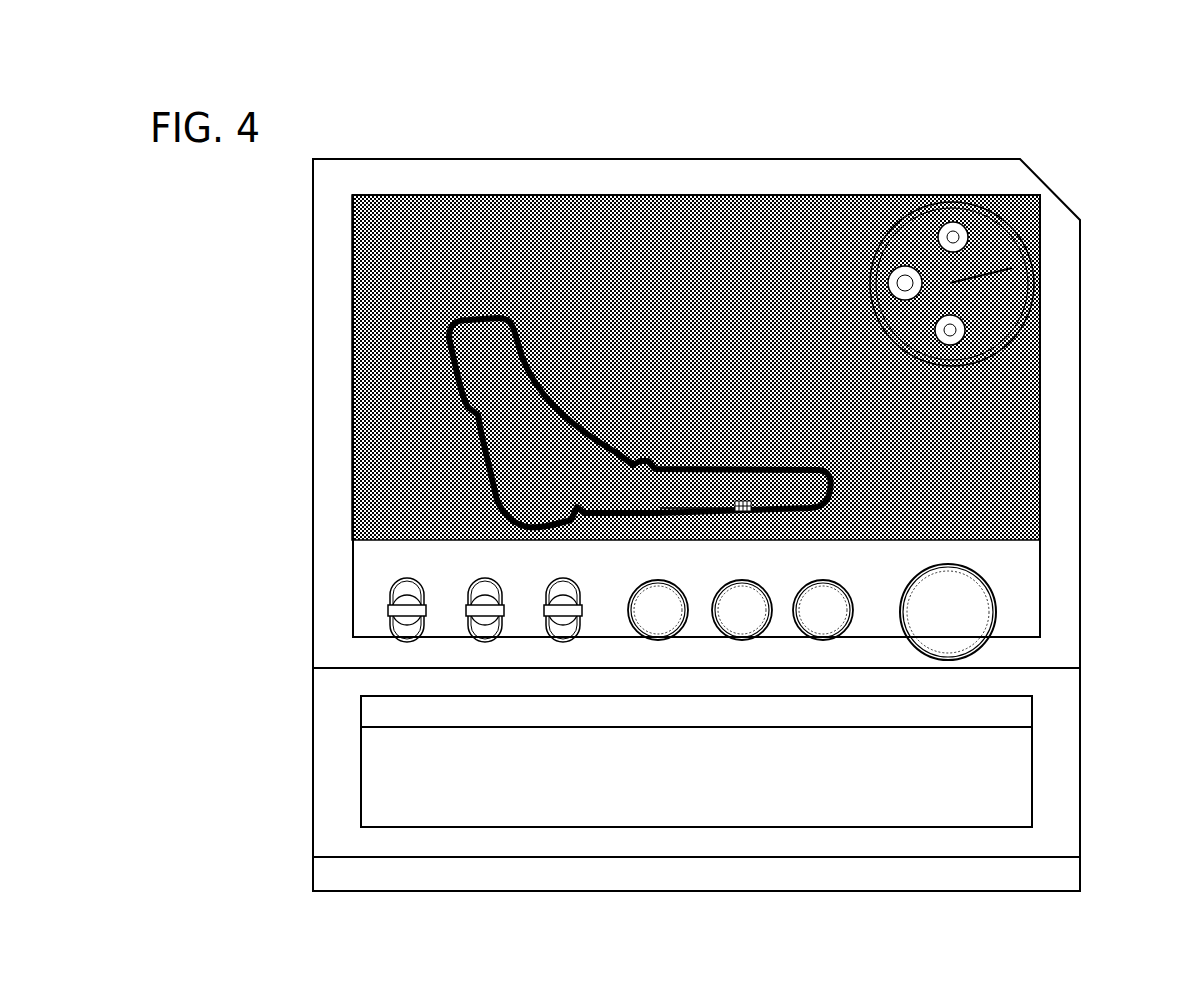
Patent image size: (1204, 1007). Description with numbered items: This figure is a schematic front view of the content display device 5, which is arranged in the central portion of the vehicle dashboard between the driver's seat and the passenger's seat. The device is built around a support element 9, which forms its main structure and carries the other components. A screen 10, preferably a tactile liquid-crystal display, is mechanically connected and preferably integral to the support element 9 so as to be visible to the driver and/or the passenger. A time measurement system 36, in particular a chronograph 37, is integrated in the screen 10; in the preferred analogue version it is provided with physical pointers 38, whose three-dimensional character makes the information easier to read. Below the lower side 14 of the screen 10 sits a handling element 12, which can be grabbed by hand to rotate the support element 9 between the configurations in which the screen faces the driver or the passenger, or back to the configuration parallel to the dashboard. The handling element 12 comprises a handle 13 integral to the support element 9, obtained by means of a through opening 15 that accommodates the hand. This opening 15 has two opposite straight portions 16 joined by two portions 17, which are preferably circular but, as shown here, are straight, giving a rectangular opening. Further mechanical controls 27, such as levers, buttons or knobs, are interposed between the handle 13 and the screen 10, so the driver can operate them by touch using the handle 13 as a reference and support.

The content display device 5 is at (630, 469).
The support element 9 is at (372, 568).
The screen 10 is at (771, 367).
The handling element 12 is at (283, 866).
The handle 13 is at (645, 835).
The lower side 14 is at (722, 549).
The through opening 15 is at (757, 787).
The straight portions 16 is at (600, 833).
The curved portions 17 is at (340, 766).
The further mechanical controls 27 is at (1012, 614).
The time measurement system 36 is at (1010, 363).
The chronograph 37 is at (650, 422).
The physical pointers 38 is at (959, 410).